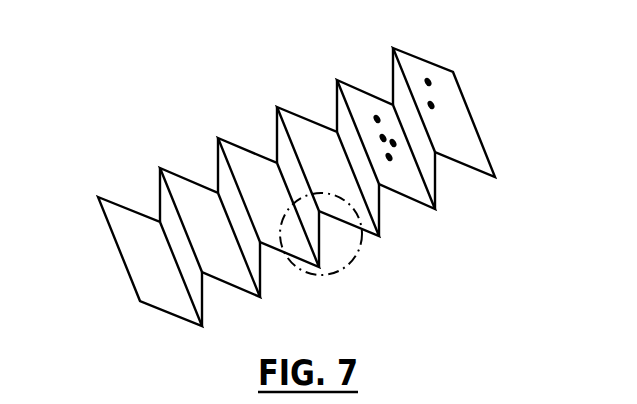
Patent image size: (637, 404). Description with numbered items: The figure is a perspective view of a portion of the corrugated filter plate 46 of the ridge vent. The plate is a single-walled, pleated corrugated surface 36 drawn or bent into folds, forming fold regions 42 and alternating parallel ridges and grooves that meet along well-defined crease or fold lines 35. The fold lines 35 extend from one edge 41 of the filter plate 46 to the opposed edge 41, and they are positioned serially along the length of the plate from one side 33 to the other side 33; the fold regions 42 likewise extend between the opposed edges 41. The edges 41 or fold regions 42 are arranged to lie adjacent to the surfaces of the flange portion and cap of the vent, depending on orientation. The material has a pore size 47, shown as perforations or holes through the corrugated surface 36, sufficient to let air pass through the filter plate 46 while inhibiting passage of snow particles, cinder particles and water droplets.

The side 33 is at (311, 168).
The fold line 35 is at (172, 196).
The corrugated surface 36 is at (252, 178).
The edge 41 is at (308, 120).
The fold region 42 is at (342, 270).
The corrugated filter plate 46 is at (448, 110).
The pore size 47 is at (429, 81).